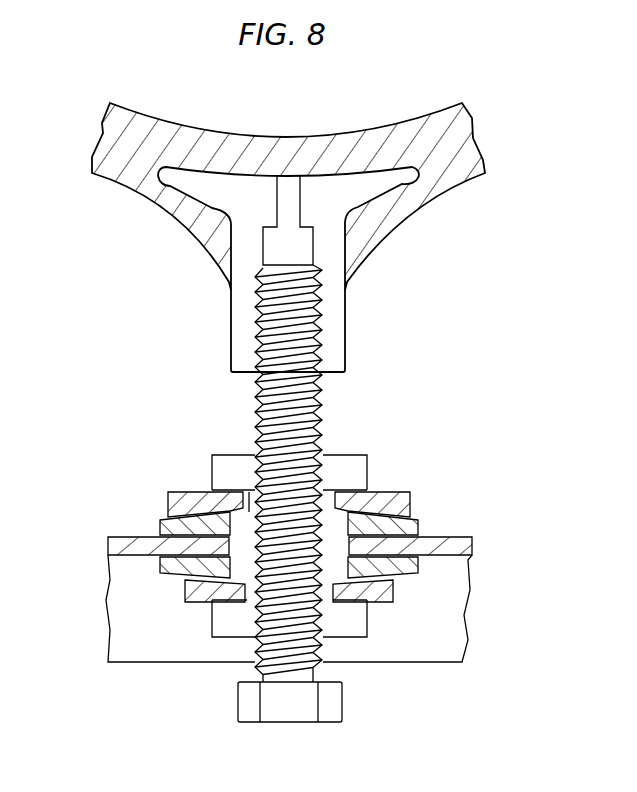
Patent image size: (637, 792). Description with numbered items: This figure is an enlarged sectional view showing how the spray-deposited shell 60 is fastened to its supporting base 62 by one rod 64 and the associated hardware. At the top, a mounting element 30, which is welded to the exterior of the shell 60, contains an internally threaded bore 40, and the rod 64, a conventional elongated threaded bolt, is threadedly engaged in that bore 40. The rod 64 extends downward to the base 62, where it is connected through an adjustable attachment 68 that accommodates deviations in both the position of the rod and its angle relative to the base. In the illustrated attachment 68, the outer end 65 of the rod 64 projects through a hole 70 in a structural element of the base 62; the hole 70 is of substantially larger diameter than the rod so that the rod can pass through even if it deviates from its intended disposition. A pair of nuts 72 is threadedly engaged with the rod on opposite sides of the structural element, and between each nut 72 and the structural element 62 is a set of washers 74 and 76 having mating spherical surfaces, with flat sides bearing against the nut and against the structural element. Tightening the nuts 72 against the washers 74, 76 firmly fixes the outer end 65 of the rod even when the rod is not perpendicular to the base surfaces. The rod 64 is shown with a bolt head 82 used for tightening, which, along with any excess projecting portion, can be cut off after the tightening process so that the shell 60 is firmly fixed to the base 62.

The mounting element 30 is at (347, 342).
The bore 40 is at (260, 347).
The shell 60 is at (420, 197).
The base 62 is at (443, 603).
The rod 64 is at (282, 481).
The outer end of the rod 65 is at (257, 618).
The adjustable attachment 68 is at (269, 534).
The hole 70 is at (250, 513).
The nut 72 is at (362, 468).
The washer 74 is at (187, 495).
The washer 76 is at (165, 528).
The head 82 is at (285, 722).